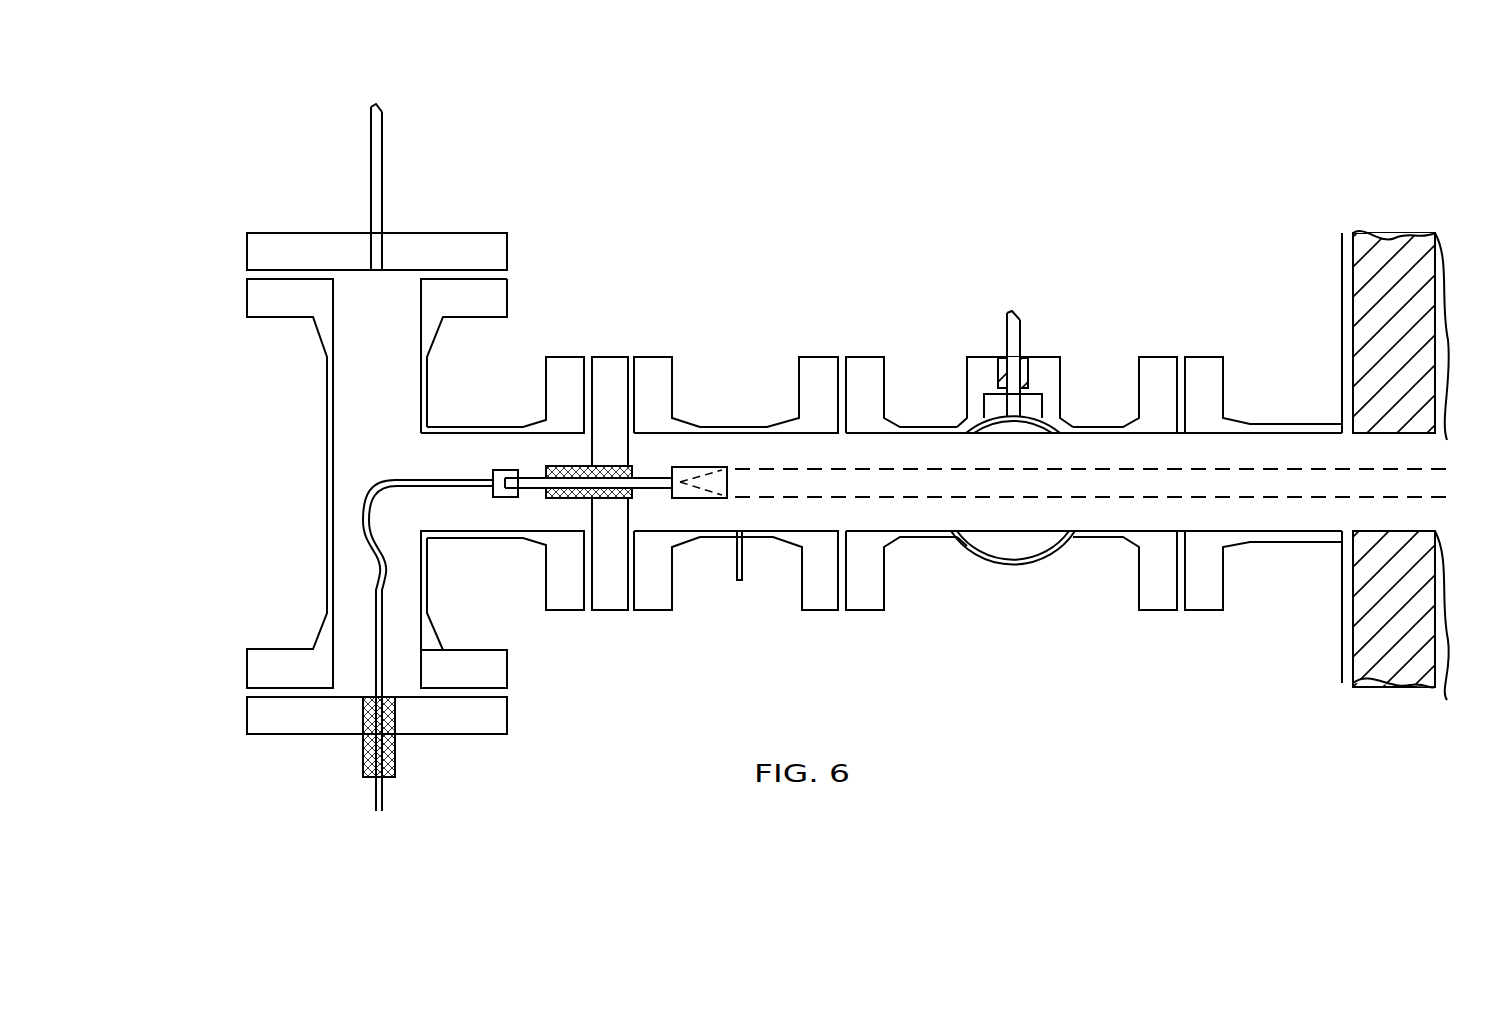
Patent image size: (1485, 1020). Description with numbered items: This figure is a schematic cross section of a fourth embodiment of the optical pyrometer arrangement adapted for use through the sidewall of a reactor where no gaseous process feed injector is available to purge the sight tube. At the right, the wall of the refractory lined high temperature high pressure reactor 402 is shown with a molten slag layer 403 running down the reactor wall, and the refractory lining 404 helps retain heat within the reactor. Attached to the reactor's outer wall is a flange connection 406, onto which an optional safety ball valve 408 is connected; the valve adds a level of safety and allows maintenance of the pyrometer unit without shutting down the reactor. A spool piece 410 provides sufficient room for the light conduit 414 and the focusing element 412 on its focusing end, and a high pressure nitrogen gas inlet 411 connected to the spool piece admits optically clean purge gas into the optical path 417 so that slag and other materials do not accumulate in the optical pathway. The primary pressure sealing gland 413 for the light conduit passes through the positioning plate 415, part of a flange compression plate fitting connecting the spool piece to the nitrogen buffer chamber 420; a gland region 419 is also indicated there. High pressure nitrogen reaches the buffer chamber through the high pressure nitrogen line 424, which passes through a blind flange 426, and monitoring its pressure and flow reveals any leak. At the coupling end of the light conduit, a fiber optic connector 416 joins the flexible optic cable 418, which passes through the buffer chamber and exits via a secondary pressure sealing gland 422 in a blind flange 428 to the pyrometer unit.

The refractory lined high temperature high pressure reactor 402 is at (1428, 228).
The molten slag layer 403 is at (1452, 250).
The refractory lining 404 is at (1368, 310).
The flange connection 406 is at (1223, 352).
The safety ball valve 408 is at (1014, 340).
The spool piece 410 is at (635, 353).
The high pressure nitrogen gas inlet 411 is at (741, 585).
The focusing element 412 is at (713, 500).
The primary pressure sealing gland 413 is at (570, 466).
The light conduit 414 is at (535, 477).
The positioning plate 415 is at (610, 365).
The fiber optic connector 416 is at (497, 470).
The optical path 417 is at (930, 498).
The flexible optic cable 418 is at (463, 487).
The flange pair 419 is at (546, 615).
The nitrogen buffer chamber 420 is at (327, 470).
The secondary pressure sealing gland 422 is at (382, 790).
The high pressure nitrogen line 424 is at (380, 176).
The blind flange 426 is at (240, 233).
The blind flange 428 is at (240, 649).